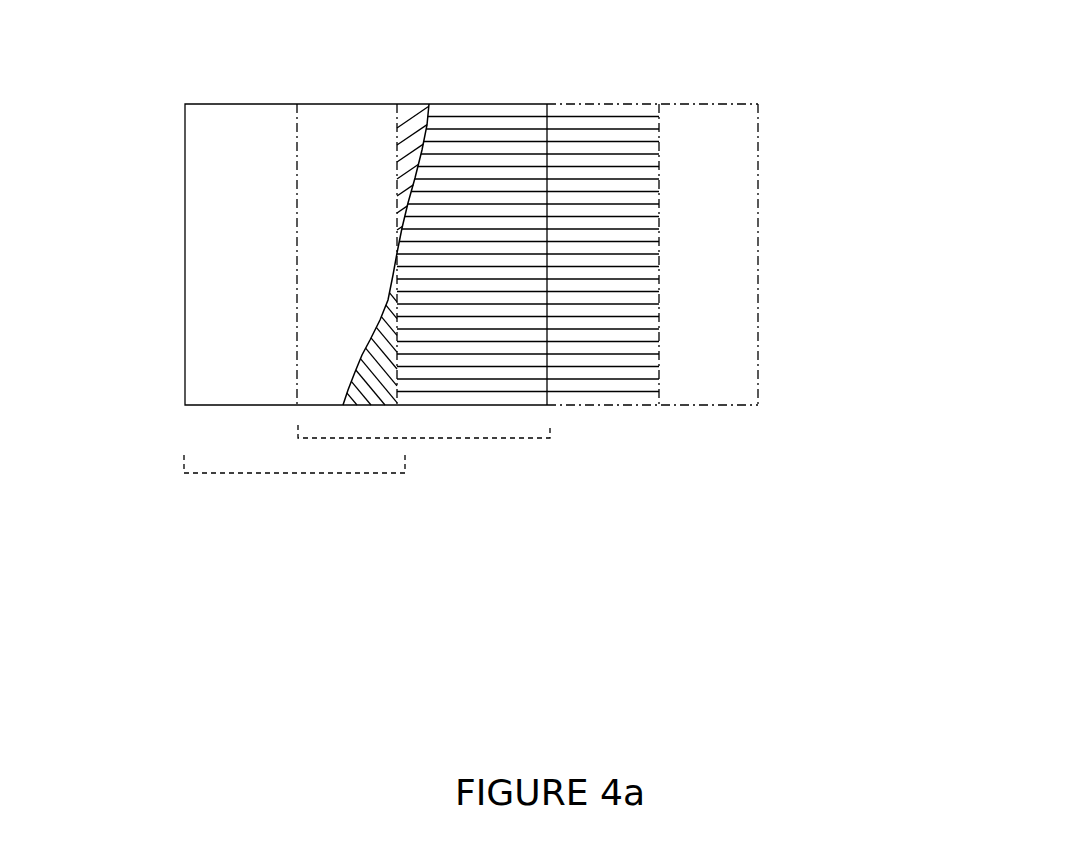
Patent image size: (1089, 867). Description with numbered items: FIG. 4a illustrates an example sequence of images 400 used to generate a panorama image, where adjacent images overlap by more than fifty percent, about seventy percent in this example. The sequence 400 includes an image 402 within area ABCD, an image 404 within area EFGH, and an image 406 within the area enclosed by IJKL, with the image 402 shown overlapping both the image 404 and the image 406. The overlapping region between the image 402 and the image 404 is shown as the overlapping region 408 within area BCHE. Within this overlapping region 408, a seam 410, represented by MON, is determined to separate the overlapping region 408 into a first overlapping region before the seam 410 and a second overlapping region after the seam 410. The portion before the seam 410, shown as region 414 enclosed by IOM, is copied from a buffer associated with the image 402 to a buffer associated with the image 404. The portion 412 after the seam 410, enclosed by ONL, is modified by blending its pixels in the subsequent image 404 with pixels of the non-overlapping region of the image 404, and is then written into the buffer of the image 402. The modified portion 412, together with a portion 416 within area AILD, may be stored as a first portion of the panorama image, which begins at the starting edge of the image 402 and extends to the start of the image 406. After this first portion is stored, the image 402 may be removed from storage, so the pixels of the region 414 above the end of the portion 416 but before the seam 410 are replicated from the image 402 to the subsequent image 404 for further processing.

The sectional view diagram of fluid catalytic cracking unit wall 400 is at (812, 557).
The outer shell region 402 is at (169, 314).
The boundary line of shell region 404 is at (281, 269).
The extended region beyond refractory 406 is at (773, 312).
The refractory lining thickness region 408 is at (423, 438).
The eroded surface profile curve 410 is at (433, 136).
The lower worn refractory area 412 is at (351, 376).
The upper worn refractory area 414 is at (404, 116).
The shell plus anchor thickness region 416 is at (295, 473).